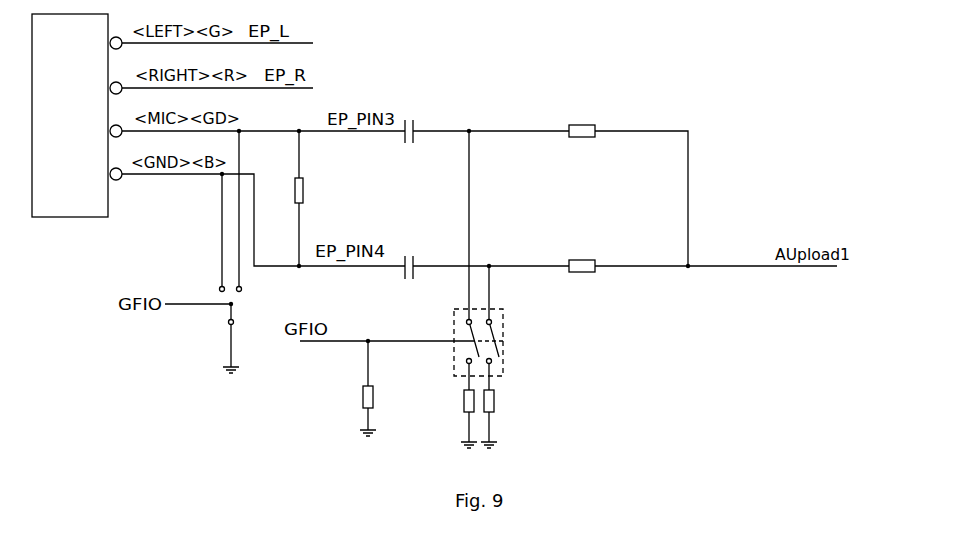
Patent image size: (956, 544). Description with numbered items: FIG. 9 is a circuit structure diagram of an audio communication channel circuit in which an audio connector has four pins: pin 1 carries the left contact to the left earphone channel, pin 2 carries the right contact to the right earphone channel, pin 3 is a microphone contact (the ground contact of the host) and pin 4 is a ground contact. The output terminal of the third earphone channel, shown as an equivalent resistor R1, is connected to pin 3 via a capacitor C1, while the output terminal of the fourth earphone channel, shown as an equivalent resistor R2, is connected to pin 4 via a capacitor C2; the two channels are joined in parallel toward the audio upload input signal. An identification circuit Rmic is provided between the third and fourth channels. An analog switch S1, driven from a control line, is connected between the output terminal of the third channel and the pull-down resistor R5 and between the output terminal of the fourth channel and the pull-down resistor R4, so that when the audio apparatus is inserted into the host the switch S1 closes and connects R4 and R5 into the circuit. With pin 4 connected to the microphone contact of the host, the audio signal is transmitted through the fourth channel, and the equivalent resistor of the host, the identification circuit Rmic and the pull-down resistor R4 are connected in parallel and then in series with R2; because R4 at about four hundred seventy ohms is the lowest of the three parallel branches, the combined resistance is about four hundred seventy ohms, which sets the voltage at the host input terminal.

The pin 1 is at (103, 44).
The pin 2 is at (103, 89).
The pin 3 is at (103, 132).
The pin 4 is at (103, 175).
The identification circuit Rmic is at (321, 198).
The capacitor C1 is at (421, 127).
The capacitor C2 is at (421, 263).
The equivalent resistor R1 is at (582, 122).
The equivalent resistor R2 is at (582, 258).
The analog switch S1 is at (493, 342).
The pull-down resistor R5 is at (457, 406).
The pull-down resistor R4 is at (499, 406).